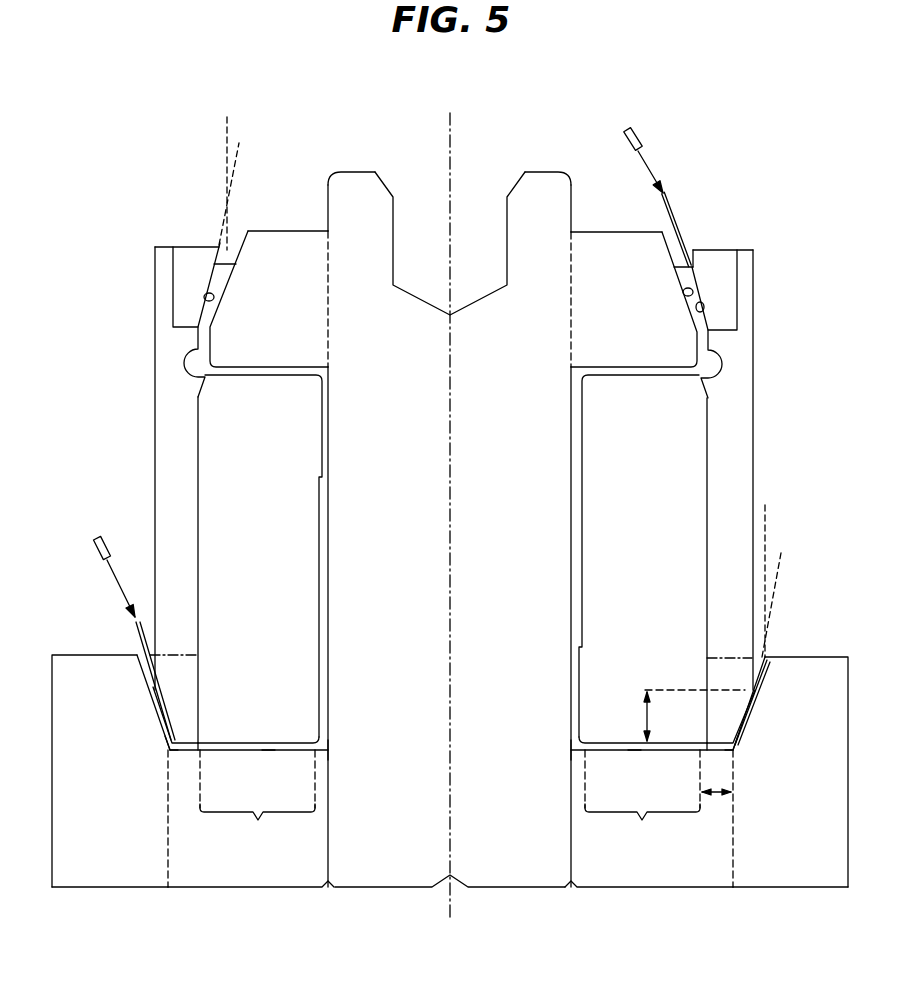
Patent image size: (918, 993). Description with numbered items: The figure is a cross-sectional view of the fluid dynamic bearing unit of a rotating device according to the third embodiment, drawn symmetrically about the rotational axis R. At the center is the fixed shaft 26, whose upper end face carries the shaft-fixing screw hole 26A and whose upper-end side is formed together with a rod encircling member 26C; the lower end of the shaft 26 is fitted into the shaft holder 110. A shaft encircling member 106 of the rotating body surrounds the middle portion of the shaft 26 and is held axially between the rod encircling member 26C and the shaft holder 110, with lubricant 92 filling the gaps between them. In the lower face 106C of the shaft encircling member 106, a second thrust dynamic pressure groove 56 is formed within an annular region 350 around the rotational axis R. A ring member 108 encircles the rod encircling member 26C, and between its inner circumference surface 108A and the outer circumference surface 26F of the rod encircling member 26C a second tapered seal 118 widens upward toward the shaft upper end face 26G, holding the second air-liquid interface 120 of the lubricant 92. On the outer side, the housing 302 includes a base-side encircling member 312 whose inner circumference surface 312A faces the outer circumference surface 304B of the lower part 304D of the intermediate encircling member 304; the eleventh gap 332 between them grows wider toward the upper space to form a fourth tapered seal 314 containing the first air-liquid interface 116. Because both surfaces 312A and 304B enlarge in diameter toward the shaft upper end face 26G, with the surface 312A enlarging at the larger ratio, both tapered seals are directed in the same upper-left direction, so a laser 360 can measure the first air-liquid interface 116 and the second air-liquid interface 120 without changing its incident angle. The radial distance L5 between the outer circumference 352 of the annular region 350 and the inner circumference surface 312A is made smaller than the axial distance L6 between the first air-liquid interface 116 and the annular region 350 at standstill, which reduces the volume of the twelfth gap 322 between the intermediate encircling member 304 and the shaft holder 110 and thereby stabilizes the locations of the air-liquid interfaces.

The shaft 26 is at (410, 875).
The shaft-fixing screw hole 26A is at (395, 205).
The rod encircling member 26C is at (305, 233).
The outer circumference surface of the rod encircling member 26F is at (244, 240).
The shaft upper end face 26G is at (362, 170).
The second thrust dynamic pressure groove 56 is at (268, 745).
The lubricant 92 is at (329, 746).
The shaft encircling member 106 is at (300, 560).
The lower face of the shaft encircling member 106C is at (295, 749).
The ring member 108 is at (183, 283).
The inner circumference surface of the ring member 108A is at (183, 300).
The shaft holder 110 is at (197, 875).
The first air-liquid interface 116 is at (142, 677).
The second tapered seal 118 is at (218, 282).
The second air-liquid interface 120 is at (232, 256).
The housing 302 is at (300, 875).
The intermediate encircling member 304 is at (163, 252).
The outer circumference surface of the lower part of the intermediate encircling mem 304B is at (152, 694).
The lower part of the intermediate encircling member 304D is at (198, 674).
The base-side encircling member 312 is at (80, 875).
The inner circumference surface of the base-side encircling member 312A is at (150, 716).
The fourth tapered seal 314 is at (157, 734).
The twelfth gap 322 is at (180, 752).
The eleventh gap 332 is at (142, 700).
The annular region 350 is at (450, 798).
The outer circumference of the annular region 352 is at (207, 740).
The laser 360 is at (120, 600).
The distance between the outer circumference of the annular region and the inner cir L5 is at (717, 796).
The distance between the first air-liquid interface and the annular region L6 is at (645, 716).
The rotational axis R is at (456, 504).